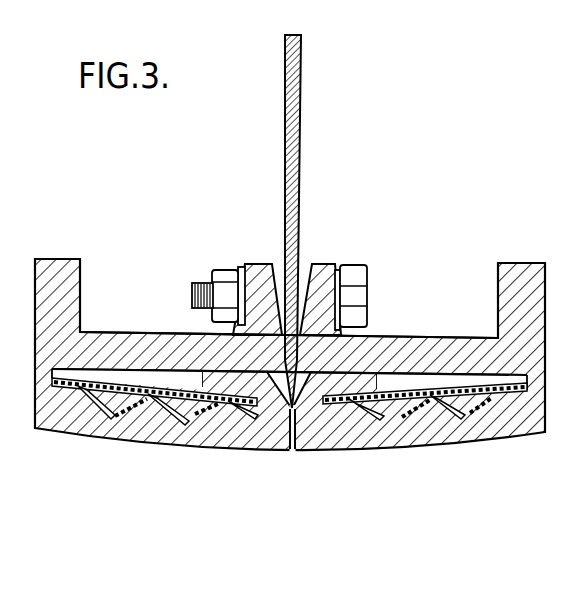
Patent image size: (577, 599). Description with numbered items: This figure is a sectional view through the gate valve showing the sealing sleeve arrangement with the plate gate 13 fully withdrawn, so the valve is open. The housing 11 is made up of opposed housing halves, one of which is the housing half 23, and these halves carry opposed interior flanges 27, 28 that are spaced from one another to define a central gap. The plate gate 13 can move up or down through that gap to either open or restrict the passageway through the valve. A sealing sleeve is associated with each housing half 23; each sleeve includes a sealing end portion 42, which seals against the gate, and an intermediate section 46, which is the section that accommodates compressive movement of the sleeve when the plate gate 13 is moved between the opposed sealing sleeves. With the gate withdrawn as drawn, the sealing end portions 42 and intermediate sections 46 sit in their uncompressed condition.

The housing 11 is at (118, 308).
The plate gate 13 is at (302, 82).
The housing half 23 is at (157, 353).
The interior flange 27 is at (262, 264).
The interior flange 28 is at (322, 264).
The sealing end portion 42 is at (278, 437).
The intermediate section 46 is at (152, 446).